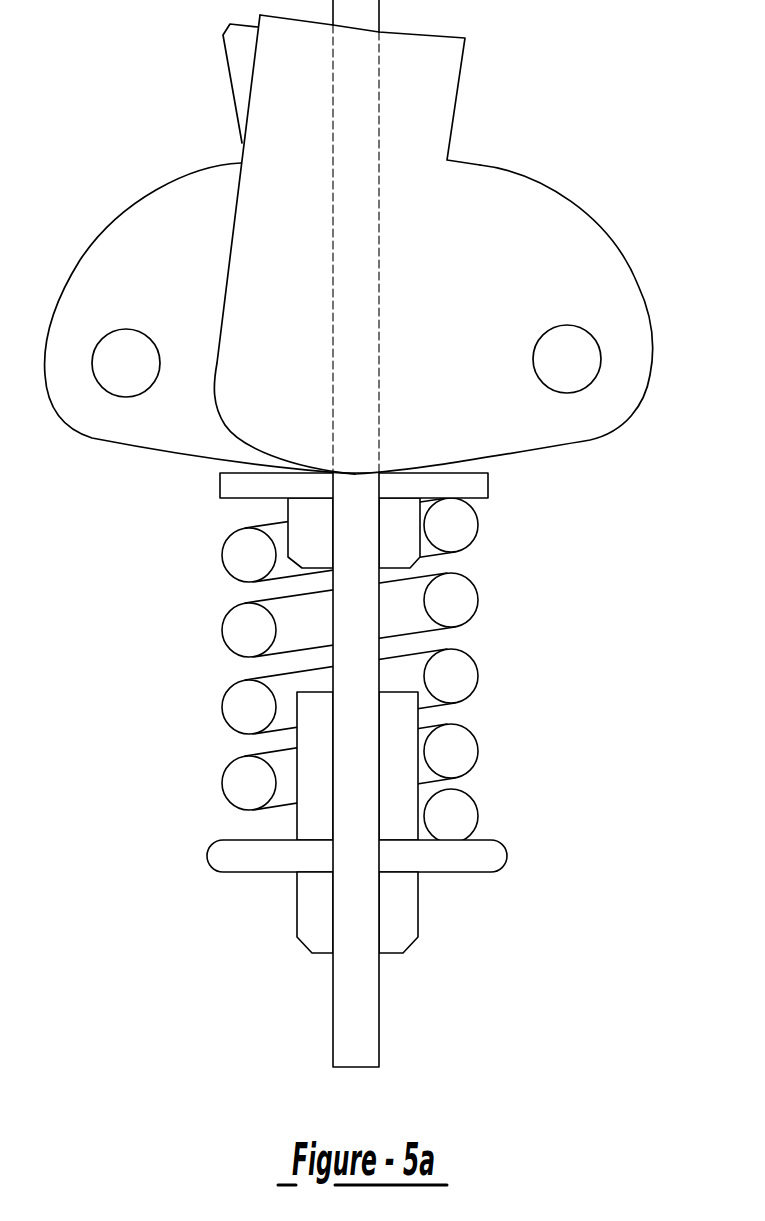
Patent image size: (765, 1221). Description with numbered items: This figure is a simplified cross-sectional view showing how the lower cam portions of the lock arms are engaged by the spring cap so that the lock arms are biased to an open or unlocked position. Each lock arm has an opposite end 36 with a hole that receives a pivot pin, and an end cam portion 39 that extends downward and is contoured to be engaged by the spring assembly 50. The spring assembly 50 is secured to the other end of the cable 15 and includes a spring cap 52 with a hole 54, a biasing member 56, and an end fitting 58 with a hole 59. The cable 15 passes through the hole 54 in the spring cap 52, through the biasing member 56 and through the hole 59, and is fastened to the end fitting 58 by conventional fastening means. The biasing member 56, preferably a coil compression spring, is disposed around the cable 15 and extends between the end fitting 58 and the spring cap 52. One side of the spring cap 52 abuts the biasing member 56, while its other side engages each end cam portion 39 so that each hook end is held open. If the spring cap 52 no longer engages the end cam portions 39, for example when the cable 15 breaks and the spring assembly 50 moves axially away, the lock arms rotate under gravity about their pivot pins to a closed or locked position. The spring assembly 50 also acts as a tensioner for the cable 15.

The cable 15 is at (333, 820).
The opposite end 36 is at (113, 445).
The end cam portion 39 is at (267, 473).
The spring assembly 50 is at (166, 687).
The spring cap 52 is at (489, 490).
The hole 54 is at (420, 557).
The biasing member 56 is at (477, 612).
The end fitting 58 is at (507, 856).
The hole 59 is at (335, 853).